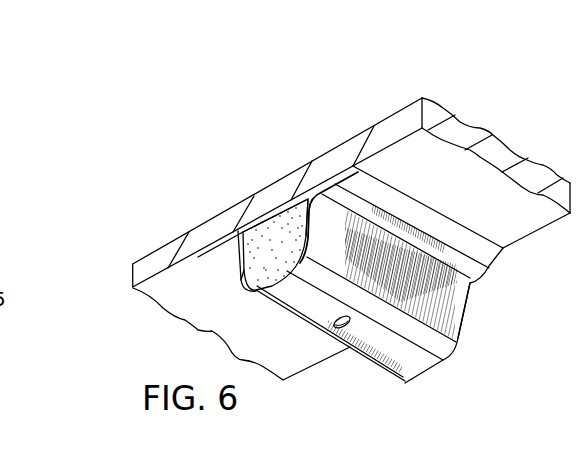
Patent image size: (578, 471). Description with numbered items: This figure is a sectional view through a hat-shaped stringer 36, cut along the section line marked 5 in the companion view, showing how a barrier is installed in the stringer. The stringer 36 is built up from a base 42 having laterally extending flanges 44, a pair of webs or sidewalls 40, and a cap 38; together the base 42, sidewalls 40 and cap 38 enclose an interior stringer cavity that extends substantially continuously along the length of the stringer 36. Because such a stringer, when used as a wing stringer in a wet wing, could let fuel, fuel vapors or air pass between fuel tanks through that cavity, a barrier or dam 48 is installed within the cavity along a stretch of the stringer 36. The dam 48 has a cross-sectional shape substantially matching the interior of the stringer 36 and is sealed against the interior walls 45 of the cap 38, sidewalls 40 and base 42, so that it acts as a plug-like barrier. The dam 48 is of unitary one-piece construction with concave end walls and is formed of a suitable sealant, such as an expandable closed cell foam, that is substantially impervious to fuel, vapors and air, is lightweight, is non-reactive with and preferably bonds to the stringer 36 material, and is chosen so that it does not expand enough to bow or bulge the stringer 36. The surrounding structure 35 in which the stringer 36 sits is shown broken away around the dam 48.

The plate / panel 35 is at (477, 197).
The stringer 36 is at (470, 355).
The cap 38 is at (423, 365).
The sidewalls 40 is at (456, 314).
The base 42 is at (280, 208).
The flanges 44 is at (236, 252).
The interior walls 45 is at (283, 208).
The dam 48 is at (247, 290).
The section line 5- 5 is at (277, 130).